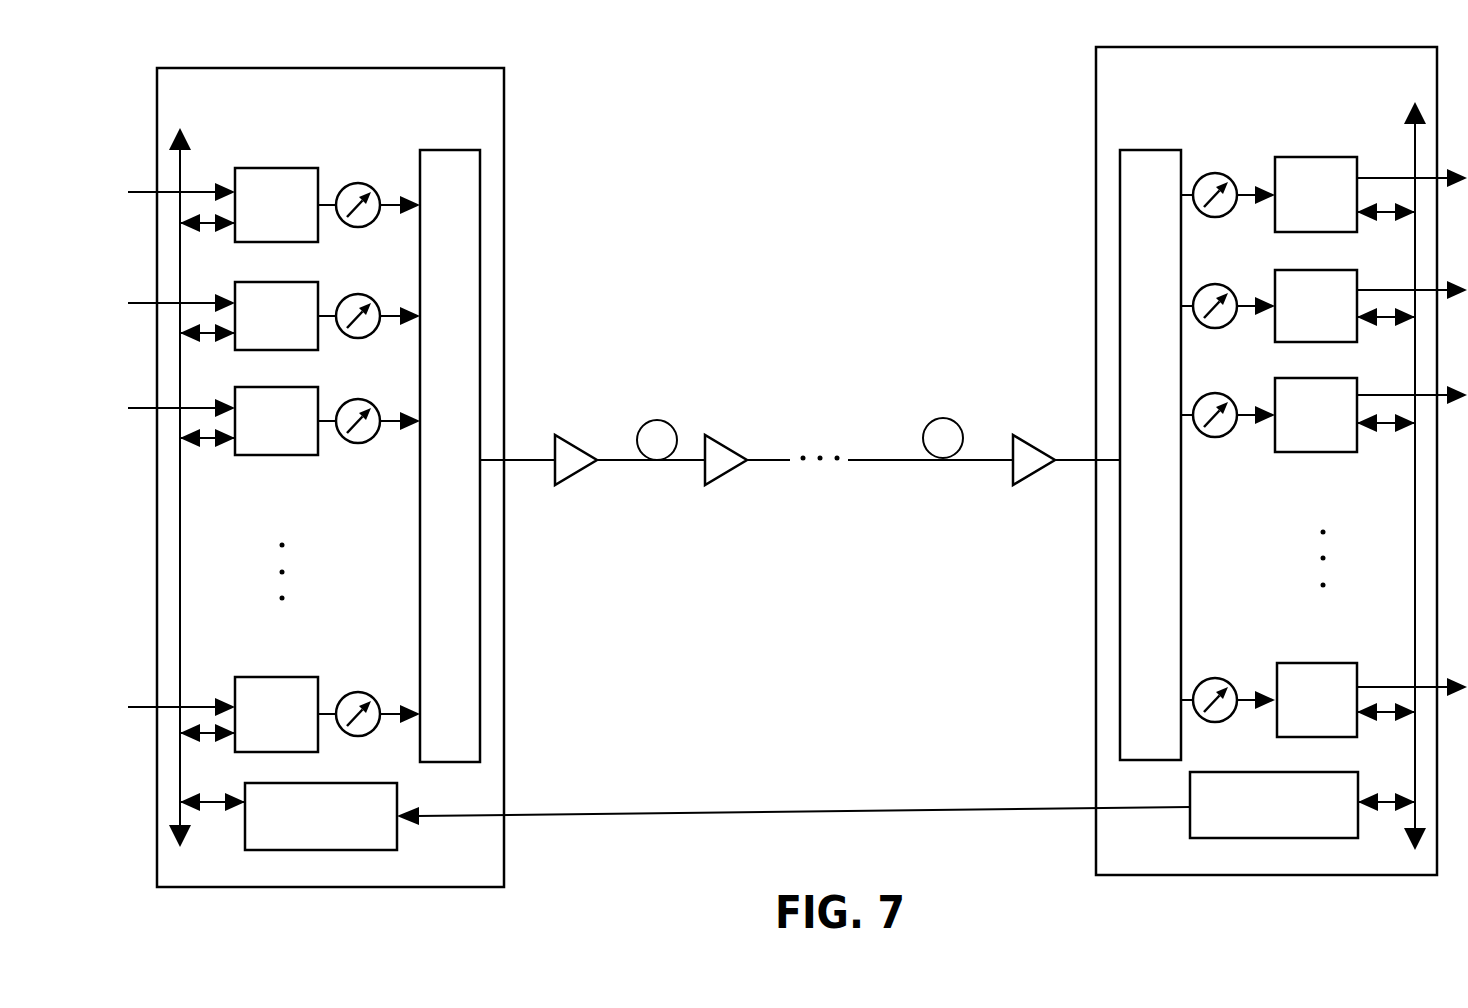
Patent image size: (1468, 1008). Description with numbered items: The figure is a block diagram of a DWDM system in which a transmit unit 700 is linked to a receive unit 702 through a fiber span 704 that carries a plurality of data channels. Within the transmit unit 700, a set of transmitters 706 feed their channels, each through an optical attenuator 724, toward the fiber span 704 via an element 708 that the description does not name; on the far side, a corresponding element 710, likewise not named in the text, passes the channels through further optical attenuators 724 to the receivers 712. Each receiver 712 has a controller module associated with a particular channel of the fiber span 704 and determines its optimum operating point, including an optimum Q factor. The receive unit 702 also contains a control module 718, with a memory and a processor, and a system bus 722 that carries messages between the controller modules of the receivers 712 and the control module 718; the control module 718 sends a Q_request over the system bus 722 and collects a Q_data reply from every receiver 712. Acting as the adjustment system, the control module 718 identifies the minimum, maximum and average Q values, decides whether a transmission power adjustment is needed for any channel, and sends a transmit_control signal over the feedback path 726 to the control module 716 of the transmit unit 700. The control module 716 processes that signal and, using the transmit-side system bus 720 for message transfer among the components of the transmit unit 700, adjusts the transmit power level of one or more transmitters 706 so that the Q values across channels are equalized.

The transmit unit 700 is at (492, 99).
The receive unit 702 is at (1147, 94).
The fiber span 704 is at (800, 429).
The transmitter 706 is at (285, 460).
The multiplexer 708 is at (469, 474).
The demultiplexer 710 is at (1171, 472).
The receiver 712 is at (1269, 447).
The control module 716 is at (340, 834).
The control module 718 is at (1298, 821).
The system bus 720 is at (180, 176).
The system bus 722 is at (1412, 163).
The optical attenuator 724 is at (805, 429).
The feedback path 726 is at (845, 779).